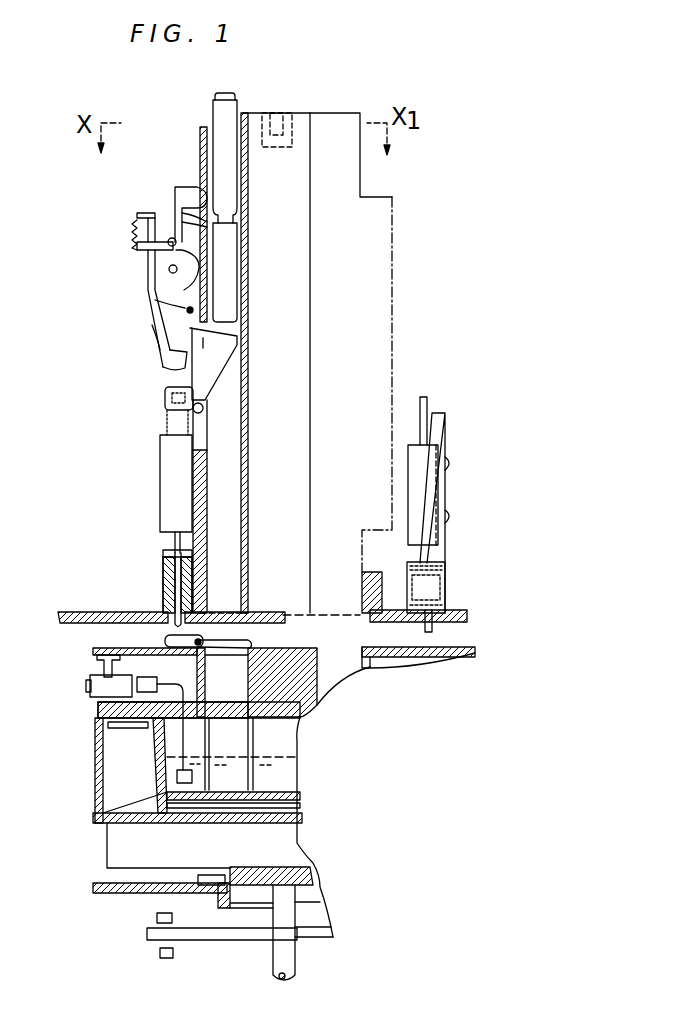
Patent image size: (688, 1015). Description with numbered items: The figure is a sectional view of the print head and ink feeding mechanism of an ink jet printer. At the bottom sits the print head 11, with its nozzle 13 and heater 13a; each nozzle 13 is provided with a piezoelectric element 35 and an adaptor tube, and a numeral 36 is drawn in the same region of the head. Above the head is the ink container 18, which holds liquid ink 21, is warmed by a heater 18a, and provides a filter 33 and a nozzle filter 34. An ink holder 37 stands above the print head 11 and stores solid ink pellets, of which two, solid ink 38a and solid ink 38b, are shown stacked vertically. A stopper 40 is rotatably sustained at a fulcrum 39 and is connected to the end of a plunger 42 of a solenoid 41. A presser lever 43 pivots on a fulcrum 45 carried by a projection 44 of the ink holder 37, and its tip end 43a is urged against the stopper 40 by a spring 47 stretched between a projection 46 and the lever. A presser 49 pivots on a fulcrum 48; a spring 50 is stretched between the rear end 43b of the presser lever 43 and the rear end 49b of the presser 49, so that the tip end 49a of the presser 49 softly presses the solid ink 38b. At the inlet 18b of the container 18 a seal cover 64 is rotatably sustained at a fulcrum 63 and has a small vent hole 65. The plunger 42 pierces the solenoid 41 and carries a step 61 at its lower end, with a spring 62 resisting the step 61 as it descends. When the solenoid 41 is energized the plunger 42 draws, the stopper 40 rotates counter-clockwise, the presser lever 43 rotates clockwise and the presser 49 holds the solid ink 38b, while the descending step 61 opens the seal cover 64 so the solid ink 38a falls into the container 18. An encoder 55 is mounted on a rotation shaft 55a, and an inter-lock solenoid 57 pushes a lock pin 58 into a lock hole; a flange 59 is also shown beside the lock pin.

The print head 11 is at (93, 652).
The nozzle 13 is at (88, 687).
The heater 13a is at (115, 727).
The ink container 18 is at (160, 783).
The heater 18a is at (302, 818).
The inlet 18b is at (240, 657).
The ink 21 is at (300, 757).
The filter 33 is at (300, 795).
The nozzle filter 34 is at (103, 822).
The piezoelectric element 35 is at (113, 660).
The base plate opening 36 is at (143, 660).
The ink holder 37 is at (246, 500).
The solid ink 38a is at (225, 296).
The solid ink 38b is at (222, 172).
The fulcrum 39 is at (204, 409).
The stopper 40 is at (198, 363).
The solenoid 41 is at (162, 483).
The plunger 42 is at (168, 420).
The presser lever 43 is at (152, 303).
The tip end 43a is at (170, 367).
The rear end 43b is at (146, 214).
The projection 44 is at (195, 265).
The fulcrum 45 is at (169, 270).
The projection 46 is at (195, 310).
The spring 47 is at (155, 338).
The fulcrum 48 is at (170, 238).
The presser 49 is at (207, 225).
The tip end 49a is at (188, 190).
The rear end 49b is at (132, 244).
The spring 50 is at (137, 230).
The encoder 55 is at (160, 952).
The rotation shaft 55a is at (295, 962).
The inter-lock solenoid 57 is at (415, 470).
The lock pin 58 is at (435, 627).
The flange 59 is at (428, 657).
The step 61 is at (168, 550).
The spring 62 is at (165, 562).
The fulcrum 63 is at (200, 645).
The seal cover 64 is at (219, 640).
The vent hole 65 is at (238, 636).